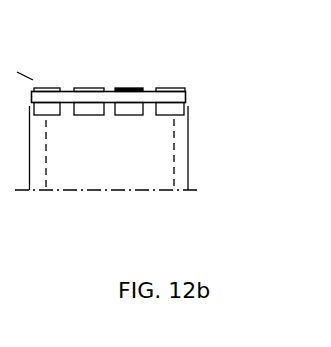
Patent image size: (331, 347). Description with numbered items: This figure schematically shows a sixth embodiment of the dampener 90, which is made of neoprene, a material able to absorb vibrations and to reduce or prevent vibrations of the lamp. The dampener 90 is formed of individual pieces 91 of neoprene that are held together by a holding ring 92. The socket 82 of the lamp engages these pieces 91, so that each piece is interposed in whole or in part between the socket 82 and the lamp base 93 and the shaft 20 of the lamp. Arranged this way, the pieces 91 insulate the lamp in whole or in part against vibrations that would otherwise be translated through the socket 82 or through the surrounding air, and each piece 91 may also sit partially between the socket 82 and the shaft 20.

The dampener 90 is at (100, 208).
The pieces 91 is at (86, 87).
The holding ring 92 is at (106, 103).
The lamp base 93 is at (185, 88).
The socket 82 is at (187, 146).
The shaft 20 is at (83, 162).